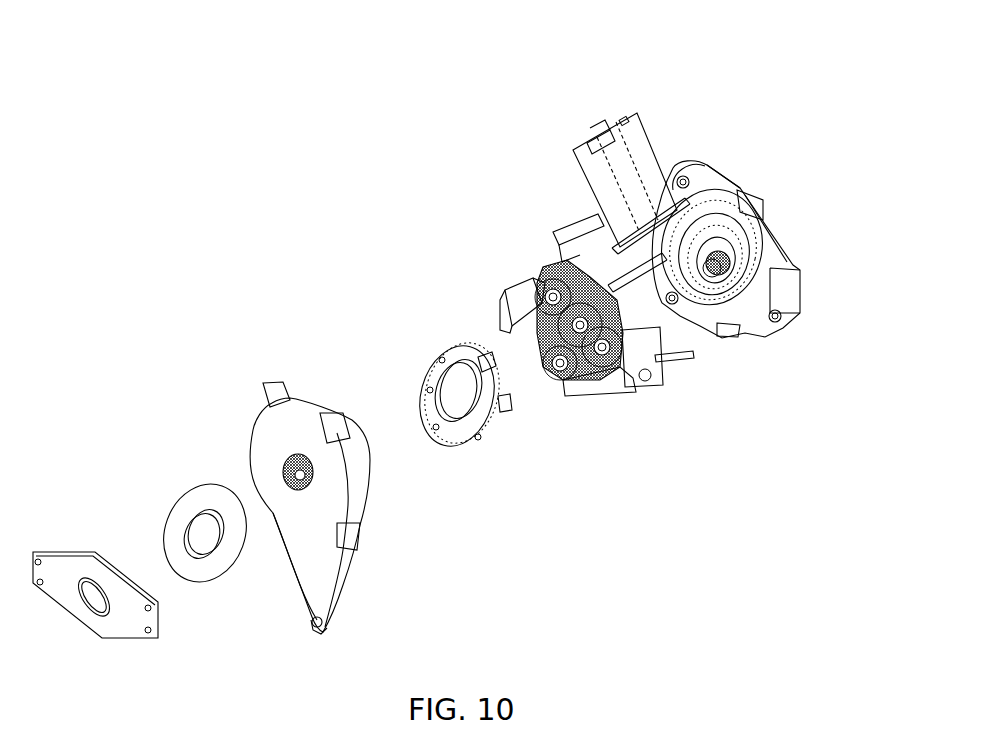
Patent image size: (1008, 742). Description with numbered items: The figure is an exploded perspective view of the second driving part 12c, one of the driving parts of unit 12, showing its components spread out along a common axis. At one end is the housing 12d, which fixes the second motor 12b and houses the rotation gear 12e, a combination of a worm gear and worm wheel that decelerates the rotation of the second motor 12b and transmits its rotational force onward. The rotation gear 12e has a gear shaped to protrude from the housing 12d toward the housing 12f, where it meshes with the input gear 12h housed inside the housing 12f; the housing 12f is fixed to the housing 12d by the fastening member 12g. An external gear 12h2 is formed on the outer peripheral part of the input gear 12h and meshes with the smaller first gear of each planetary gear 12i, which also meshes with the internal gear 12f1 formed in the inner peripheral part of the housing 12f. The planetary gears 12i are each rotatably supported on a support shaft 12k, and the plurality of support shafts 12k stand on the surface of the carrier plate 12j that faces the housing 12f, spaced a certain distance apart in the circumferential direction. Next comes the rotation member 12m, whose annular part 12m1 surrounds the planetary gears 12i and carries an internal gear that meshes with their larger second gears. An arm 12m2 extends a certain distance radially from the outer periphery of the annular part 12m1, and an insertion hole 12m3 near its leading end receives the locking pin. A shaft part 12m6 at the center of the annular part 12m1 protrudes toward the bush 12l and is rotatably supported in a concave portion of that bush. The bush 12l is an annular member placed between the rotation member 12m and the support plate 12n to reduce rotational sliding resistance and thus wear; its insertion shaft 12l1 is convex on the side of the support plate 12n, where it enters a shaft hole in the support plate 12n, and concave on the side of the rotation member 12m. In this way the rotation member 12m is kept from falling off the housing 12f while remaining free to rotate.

The drive unit 12 is at (252, 157).
The second motor 12b is at (605, 143).
The second driving part 12c is at (778, 184).
The housing 12d is at (735, 195).
The rotation gear 12e is at (717, 277).
The housing 12f is at (513, 300).
The internal gear 12f1 is at (590, 380).
The fastening member 12g is at (633, 383).
The input gear 12h is at (592, 335).
The external gear 12h2 is at (612, 335).
The planetary gear 12i is at (572, 360).
The carrier plate 12j is at (432, 360).
The support shaft 12k is at (507, 403).
The bush 12l is at (180, 497).
The insertion shaft 12l1 is at (213, 527).
The rotation member 12m is at (265, 428).
The annular part 12m1 is at (343, 493).
The arm 12m2 is at (317, 553).
The insertion hole 12m3 is at (322, 627).
The shaft part 12m6 is at (306, 470).
The support plate 12n is at (83, 572).